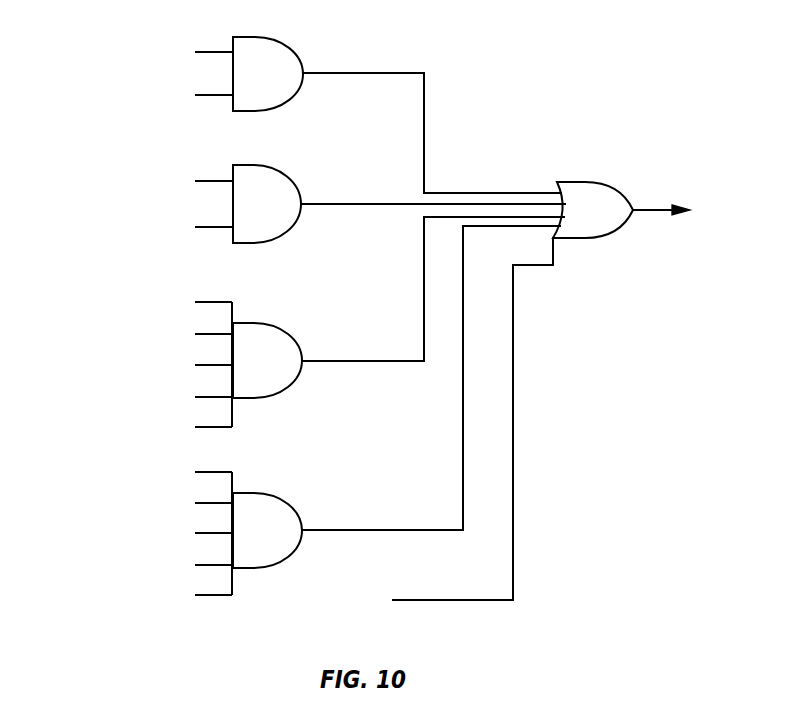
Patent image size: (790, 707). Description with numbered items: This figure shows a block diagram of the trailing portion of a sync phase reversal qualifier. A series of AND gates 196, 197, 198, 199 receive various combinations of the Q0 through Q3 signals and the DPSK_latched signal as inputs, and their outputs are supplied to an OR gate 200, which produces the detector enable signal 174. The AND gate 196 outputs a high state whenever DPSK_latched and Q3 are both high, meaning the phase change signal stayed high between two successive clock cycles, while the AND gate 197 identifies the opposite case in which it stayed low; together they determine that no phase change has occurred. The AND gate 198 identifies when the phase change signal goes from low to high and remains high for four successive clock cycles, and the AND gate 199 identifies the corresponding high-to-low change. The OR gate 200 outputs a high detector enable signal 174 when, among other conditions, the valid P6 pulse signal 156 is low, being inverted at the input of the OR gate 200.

The AND gate 196 is at (262, 37).
The AND gate 197 is at (260, 165).
The AND gate 198 is at (258, 323).
The AND gate 199 is at (258, 493).
The OR gate 200 is at (577, 182).
The detector enable signal 174 is at (655, 211).
The valid P6 pulse signal 156 is at (432, 600).